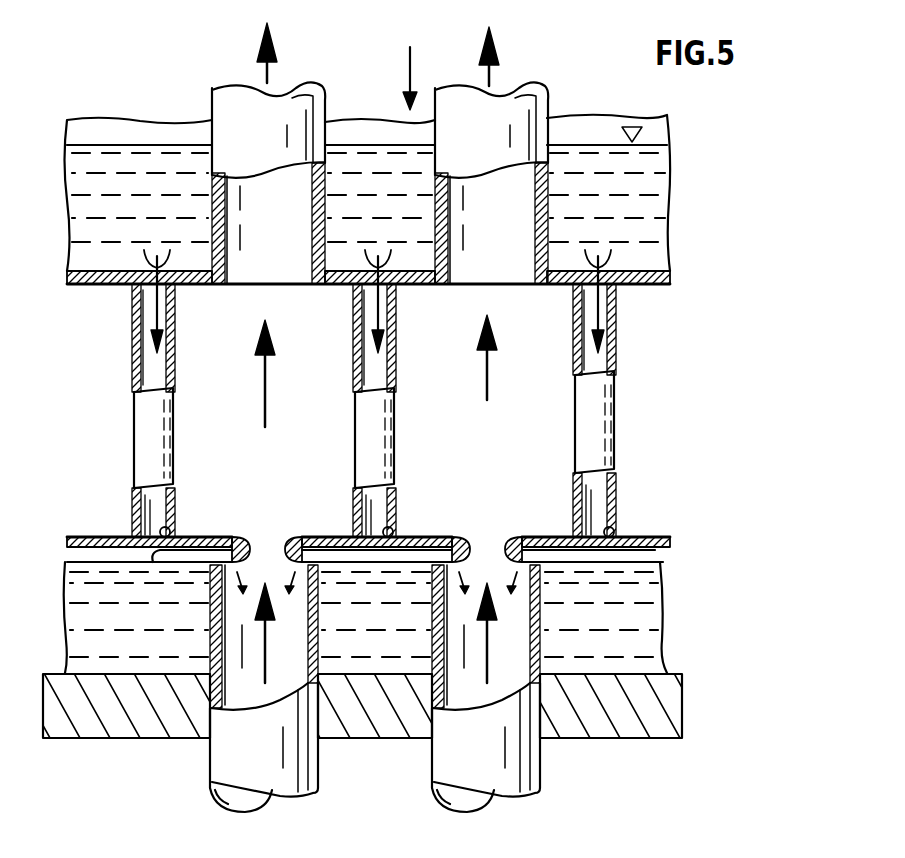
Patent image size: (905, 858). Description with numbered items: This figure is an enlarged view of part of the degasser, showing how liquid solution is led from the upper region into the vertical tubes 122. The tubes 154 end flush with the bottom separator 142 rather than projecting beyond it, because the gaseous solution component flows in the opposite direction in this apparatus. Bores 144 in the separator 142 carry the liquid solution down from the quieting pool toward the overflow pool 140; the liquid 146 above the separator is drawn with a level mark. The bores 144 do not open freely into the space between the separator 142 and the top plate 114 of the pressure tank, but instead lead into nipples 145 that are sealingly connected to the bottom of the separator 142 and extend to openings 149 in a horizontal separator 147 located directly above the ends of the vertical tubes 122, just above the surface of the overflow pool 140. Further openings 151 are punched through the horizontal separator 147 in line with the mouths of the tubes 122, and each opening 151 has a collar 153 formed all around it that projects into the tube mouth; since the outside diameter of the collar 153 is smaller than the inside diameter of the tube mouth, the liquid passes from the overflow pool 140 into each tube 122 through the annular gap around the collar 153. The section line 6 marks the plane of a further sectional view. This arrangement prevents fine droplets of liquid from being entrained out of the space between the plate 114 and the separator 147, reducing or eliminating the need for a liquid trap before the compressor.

The section line 6 is at (410, 68).
The top plate 114 is at (677, 713).
The vertical tube 122 is at (212, 768).
The overflow pool 140 is at (99, 606).
The bottom separator 142 is at (103, 267).
The bore 144 is at (132, 303).
The nipple 145 is at (132, 440).
The liquid 146 is at (630, 210).
The horizontal separator 147 is at (647, 537).
The opening 149 is at (172, 529).
The opening 151 is at (263, 538).
The collar 153 is at (284, 538).
The tube 154 is at (212, 102).